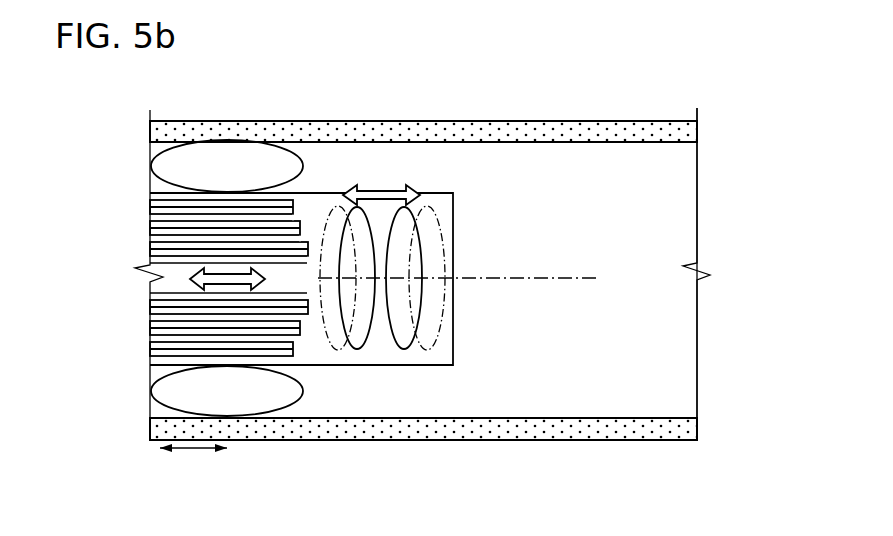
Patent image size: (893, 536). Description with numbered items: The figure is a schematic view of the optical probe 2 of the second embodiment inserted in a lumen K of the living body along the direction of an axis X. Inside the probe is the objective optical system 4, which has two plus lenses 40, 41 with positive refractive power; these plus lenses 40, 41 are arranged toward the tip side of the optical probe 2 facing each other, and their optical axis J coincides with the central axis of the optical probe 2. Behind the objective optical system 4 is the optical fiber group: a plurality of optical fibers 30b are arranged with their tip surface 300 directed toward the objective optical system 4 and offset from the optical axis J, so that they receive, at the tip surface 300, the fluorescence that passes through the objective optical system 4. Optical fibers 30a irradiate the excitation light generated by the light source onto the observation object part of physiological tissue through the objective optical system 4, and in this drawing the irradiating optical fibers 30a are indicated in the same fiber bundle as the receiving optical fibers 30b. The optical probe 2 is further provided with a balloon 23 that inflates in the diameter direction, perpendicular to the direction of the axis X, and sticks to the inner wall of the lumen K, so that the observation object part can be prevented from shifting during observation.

The optical probe 2 is at (468, 158).
The lumen K is at (672, 142).
The balloon 23 is at (218, 160).
The tip surface 300 is at (309, 325).
The optical fiber 30b is at (150, 249).
The optical fiber 30a is at (271, 259).
The objective optical system 4 is at (386, 356).
The plus lens 40 is at (338, 350).
The plus lens 41 is at (404, 349).
The optical axis J is at (465, 279).
The axis X is at (193, 464).